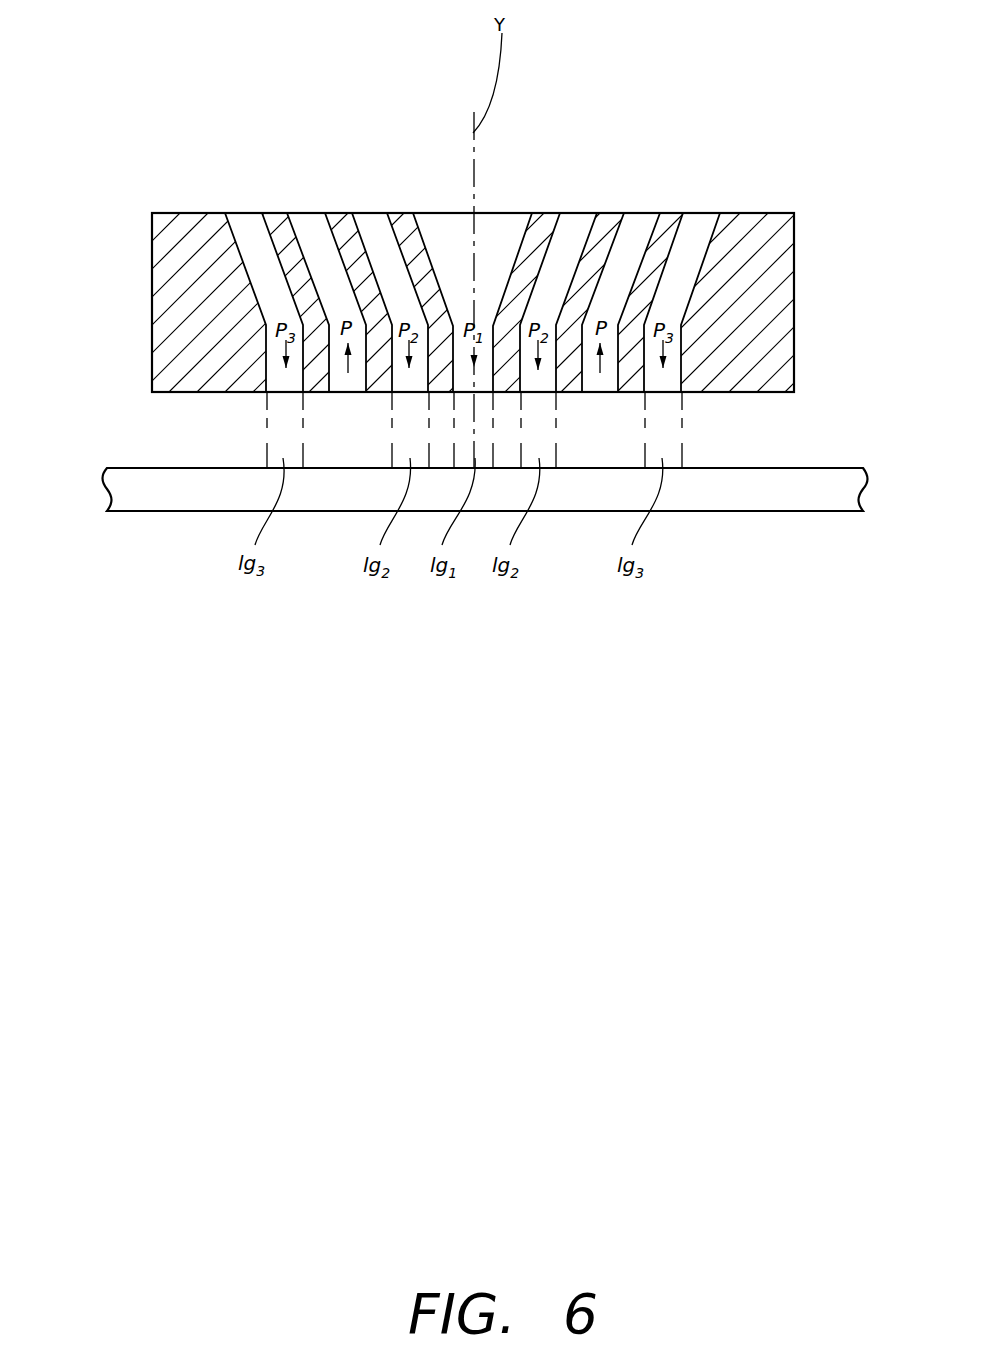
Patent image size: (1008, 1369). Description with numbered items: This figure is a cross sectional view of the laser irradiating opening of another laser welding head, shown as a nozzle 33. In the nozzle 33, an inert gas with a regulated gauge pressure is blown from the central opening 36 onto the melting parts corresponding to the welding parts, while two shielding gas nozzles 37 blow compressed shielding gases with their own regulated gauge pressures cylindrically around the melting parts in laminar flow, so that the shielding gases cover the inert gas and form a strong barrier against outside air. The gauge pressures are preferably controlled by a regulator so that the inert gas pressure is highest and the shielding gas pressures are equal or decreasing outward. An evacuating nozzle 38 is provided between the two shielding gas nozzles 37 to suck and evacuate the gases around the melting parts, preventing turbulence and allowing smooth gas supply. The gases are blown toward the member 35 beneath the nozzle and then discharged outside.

The nozzle 33 is at (797, 283).
The substrate plate 35 is at (767, 511).
The central gas nozzle 36 is at (447, 243).
The shielding gas nozzles 37 is at (770, 170).
The evacuating nozzle 38 is at (313, 233).